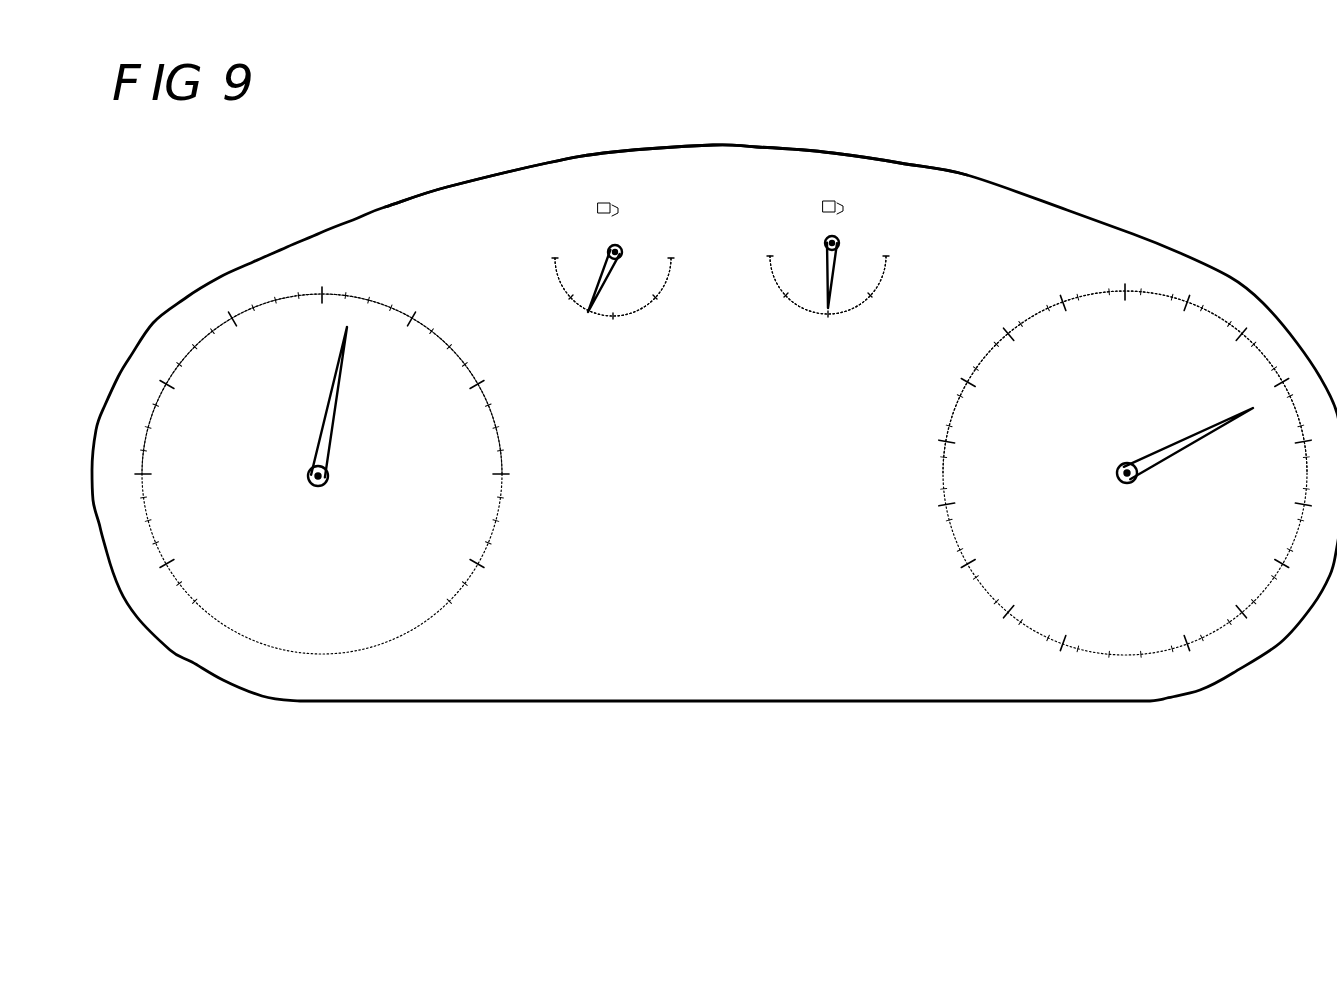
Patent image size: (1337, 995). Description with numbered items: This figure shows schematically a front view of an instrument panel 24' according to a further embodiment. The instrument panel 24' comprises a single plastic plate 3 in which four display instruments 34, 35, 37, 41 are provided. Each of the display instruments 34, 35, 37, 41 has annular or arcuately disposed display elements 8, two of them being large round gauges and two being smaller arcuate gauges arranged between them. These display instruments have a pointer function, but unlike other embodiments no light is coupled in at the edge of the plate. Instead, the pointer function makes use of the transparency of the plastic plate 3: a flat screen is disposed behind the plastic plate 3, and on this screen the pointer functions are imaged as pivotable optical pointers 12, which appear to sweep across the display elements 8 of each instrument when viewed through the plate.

The plastic plate 3 is at (760, 162).
The instrument panel 24' is at (714, 393).
The display instrument 34 is at (441, 593).
The display instrument 35 is at (985, 590).
The display instrument 37 is at (623, 316).
The display instrument 41 is at (825, 316).
The display elements 8 is at (391, 352).
The optical pointer 12 is at (333, 430).